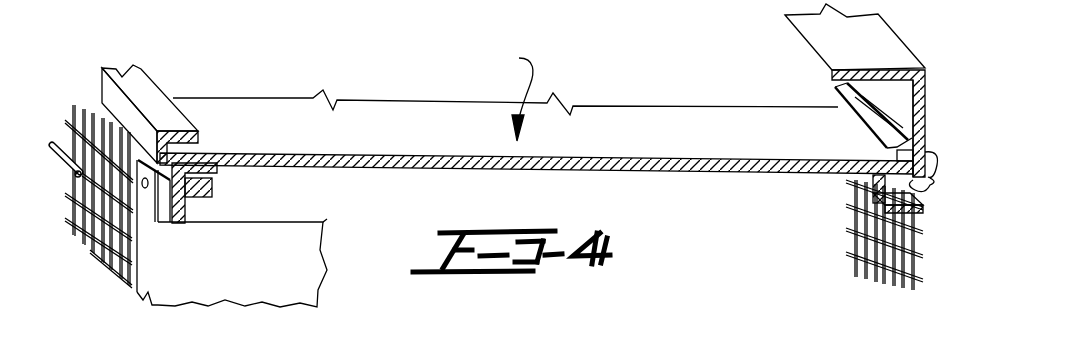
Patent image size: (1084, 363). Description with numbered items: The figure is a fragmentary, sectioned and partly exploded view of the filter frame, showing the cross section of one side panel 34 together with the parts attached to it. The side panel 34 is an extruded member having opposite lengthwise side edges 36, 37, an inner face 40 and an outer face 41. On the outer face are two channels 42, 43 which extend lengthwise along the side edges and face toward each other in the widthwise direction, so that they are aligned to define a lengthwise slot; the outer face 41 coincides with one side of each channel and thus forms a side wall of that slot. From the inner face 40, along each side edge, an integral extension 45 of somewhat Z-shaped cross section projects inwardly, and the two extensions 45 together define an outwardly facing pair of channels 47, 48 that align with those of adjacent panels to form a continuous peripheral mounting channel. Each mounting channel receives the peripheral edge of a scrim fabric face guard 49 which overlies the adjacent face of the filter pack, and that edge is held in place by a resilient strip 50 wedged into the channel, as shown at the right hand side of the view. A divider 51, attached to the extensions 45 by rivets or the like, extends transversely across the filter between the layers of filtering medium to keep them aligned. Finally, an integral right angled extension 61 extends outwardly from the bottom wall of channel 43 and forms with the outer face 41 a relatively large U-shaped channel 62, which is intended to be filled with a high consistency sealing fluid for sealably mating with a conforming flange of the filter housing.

The side panel 34 is at (507, 92).
The side edge 36 is at (112, 90).
The side edge 37 is at (927, 85).
The inner face 40 is at (447, 172).
The outer face 41 is at (444, 133).
The channel 42 is at (176, 146).
The channel 43 is at (897, 157).
The extension 45 is at (195, 198).
The channel 47 is at (184, 177).
The channel 48 is at (873, 190).
The scrim fabric face guard 49 is at (100, 252).
The resilient strip 50 is at (52, 147).
The divider 51 is at (295, 250).
The right angled extension 61 is at (926, 104).
The U-shaped channel 62 is at (834, 99).